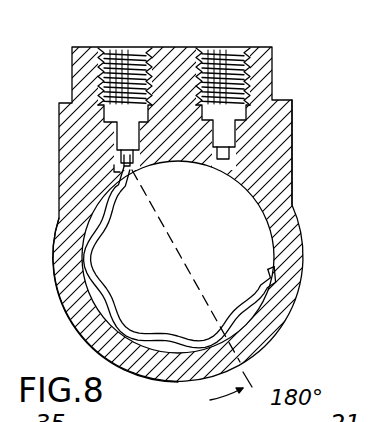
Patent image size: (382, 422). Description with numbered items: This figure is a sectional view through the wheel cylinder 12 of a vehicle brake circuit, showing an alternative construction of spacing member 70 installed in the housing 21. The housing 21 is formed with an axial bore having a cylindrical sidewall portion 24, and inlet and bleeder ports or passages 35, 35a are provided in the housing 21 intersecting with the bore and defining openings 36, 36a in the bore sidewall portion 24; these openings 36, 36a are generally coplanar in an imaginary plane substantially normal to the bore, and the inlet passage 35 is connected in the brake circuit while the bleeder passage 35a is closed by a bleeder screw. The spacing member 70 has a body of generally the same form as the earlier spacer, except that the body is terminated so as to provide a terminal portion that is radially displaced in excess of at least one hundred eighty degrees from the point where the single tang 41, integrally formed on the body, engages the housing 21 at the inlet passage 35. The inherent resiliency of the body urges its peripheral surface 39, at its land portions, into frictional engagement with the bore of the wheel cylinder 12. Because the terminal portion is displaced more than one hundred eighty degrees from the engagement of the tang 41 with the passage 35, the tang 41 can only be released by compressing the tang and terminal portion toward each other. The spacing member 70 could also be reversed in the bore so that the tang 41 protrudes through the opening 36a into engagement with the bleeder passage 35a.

The wheel cylinder 12 is at (288, 89).
The housing 21 is at (296, 150).
The cylindrical sidewall portion 24 is at (272, 247).
The inlet port 35 is at (112, 62).
The bleeder port 35a is at (232, 55).
The opening 36 is at (138, 160).
The opening 36a is at (222, 172).
The peripheral surface 39 is at (95, 318).
The single tang 41 is at (128, 173).
The spacing member 70 is at (113, 297).